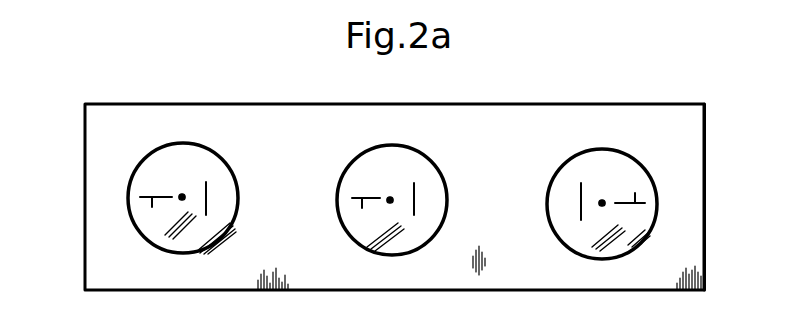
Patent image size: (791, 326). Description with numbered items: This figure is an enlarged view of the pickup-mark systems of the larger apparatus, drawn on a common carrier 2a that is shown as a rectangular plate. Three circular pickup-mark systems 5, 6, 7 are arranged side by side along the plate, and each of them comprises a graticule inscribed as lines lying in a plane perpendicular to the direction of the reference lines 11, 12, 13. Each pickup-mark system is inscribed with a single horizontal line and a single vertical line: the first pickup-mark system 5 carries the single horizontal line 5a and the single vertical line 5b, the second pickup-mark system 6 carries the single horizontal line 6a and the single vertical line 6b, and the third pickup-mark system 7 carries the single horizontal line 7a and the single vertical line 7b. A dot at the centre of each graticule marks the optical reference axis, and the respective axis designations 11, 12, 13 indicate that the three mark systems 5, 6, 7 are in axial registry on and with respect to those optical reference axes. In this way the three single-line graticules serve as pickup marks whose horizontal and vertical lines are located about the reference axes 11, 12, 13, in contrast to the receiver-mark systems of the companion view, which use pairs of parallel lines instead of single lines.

The pickup-mark carrier 2a is at (84, 263).
The pickup-mark system 5 is at (156, 162).
The single horizontal line 5a is at (152, 207).
The single vertical line 5b is at (207, 201).
The reference line 11 is at (182, 196).
The pickup-mark system 6 is at (363, 167).
The single horizontal line 6a is at (362, 208).
The single vertical line 6b is at (415, 202).
The reference line 12 is at (390, 199).
The pickup-mark system 7 is at (591, 163).
The single horizontal line 7a is at (635, 193).
The single vertical line 7b is at (580, 209).
The reference line 13 is at (603, 202).